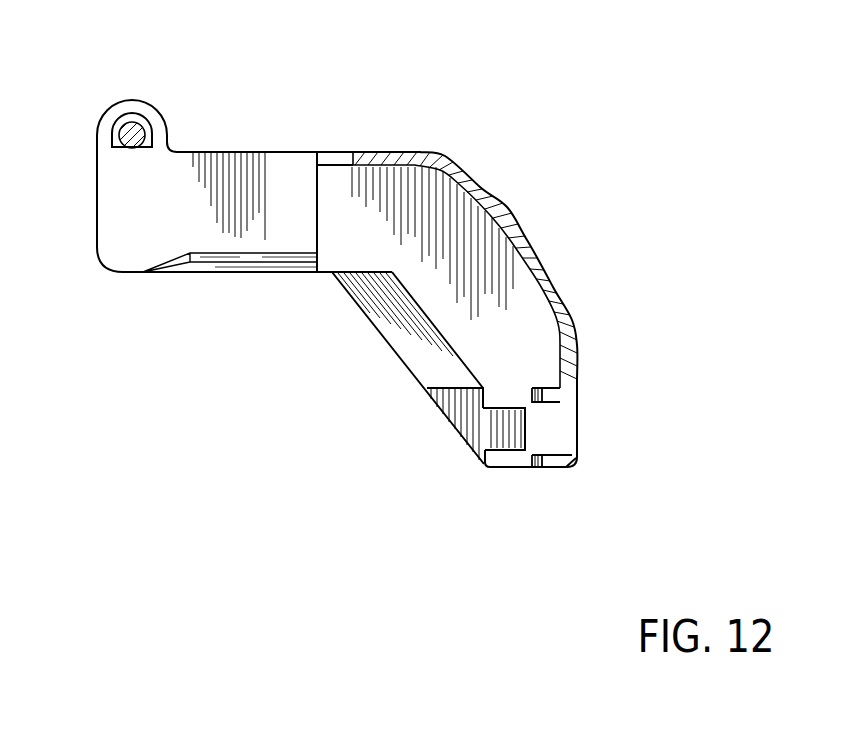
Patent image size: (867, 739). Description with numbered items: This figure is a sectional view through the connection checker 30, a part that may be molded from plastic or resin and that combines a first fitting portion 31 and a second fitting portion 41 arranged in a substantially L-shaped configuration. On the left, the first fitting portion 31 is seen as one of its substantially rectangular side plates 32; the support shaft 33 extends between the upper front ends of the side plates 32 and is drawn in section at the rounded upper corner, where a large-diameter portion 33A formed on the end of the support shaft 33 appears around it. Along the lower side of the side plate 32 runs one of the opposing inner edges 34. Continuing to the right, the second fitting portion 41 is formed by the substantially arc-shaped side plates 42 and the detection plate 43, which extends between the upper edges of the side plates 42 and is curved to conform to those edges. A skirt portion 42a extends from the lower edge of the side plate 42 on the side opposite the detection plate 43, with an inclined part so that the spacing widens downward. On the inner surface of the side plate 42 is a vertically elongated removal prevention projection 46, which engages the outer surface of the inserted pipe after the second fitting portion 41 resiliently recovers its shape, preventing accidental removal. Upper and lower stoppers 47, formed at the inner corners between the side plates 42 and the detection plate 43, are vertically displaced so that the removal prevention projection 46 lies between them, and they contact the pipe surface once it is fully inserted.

The connection checker 30 is at (520, 187).
The first fitting portion 31 is at (235, 147).
The side plates 32 is at (278, 172).
The support shaft 33 is at (128, 127).
The large-diameter portions 33A is at (150, 137).
The inner edges 34 is at (253, 272).
The second fitting portion 41 is at (573, 275).
The side plates 42 is at (470, 273).
The skirt portions 42a is at (447, 403).
The detection plate 43 is at (528, 247).
The removal prevention projections 46 is at (523, 450).
The stoppers 47 is at (542, 468).